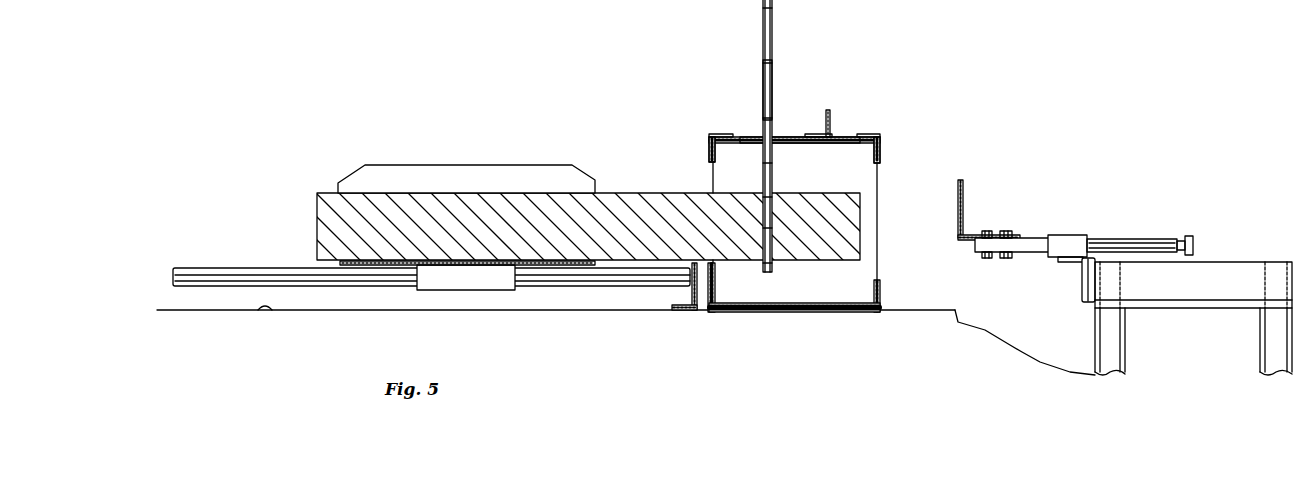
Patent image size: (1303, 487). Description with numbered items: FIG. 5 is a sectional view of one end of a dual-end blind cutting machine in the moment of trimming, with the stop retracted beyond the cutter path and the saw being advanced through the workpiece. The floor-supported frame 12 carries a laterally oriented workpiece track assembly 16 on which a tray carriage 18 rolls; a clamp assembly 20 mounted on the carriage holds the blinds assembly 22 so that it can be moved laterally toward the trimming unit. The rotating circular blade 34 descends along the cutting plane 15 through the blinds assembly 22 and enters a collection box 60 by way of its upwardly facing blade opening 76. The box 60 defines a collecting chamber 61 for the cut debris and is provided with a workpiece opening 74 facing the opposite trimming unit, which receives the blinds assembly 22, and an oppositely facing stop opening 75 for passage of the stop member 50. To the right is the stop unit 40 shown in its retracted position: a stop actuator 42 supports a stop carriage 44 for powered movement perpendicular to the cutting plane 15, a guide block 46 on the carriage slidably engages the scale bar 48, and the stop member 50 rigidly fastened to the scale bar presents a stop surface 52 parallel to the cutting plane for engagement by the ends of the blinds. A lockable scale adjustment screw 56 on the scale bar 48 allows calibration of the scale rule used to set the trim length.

The frame 12 is at (262, 311).
The cutting plane 15 is at (763, 88).
The workpiece track assembly 16 is at (268, 268).
The tray carriage 18 is at (420, 291).
The clamp assembly 20 is at (470, 165).
The blinds assembly 22 is at (648, 193).
The circular blade 34 is at (772, 68).
The stop unit 40 is at (1049, 314).
The stop actuator 42 is at (1242, 262).
The stop carriage 44 is at (1082, 293).
The guide block 46 is at (1055, 235).
The scale bar 48 is at (1165, 243).
The stop member 50 is at (975, 237).
The stop surface 52 is at (960, 180).
The scale adjustment screw 56 is at (1188, 236).
The collection box 60 is at (880, 137).
The collecting chamber 61 is at (794, 223).
The workpiece opening 74 is at (711, 178).
The stop opening 75 is at (881, 172).
The blade opening 76 is at (778, 137).